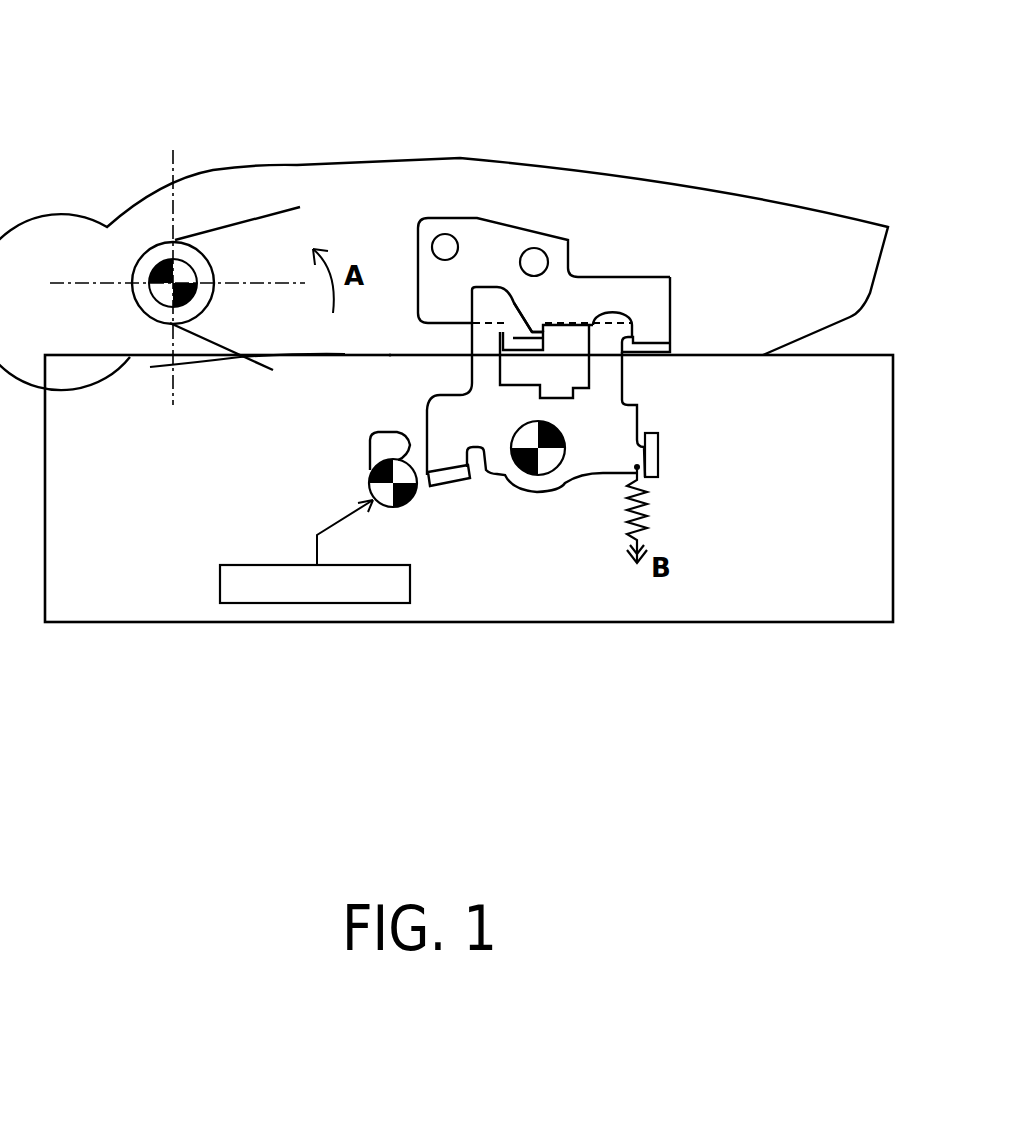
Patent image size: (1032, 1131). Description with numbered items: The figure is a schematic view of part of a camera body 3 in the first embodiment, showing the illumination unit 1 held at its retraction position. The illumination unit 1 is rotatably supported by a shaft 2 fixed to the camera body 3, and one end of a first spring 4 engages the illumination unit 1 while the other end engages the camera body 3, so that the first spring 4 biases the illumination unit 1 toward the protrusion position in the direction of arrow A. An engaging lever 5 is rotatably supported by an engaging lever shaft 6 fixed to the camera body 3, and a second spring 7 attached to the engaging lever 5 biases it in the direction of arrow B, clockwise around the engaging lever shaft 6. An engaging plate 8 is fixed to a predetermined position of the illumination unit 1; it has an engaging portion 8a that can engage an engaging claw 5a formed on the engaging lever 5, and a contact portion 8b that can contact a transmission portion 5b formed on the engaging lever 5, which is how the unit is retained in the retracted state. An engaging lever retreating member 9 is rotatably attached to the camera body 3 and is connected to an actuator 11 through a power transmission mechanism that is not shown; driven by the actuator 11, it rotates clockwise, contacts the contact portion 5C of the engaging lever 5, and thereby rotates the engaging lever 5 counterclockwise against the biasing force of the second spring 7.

The illumination unit 1 is at (350, 217).
The shaft 2 is at (175, 267).
The camera body 3 is at (95, 393).
The first spring 4 is at (272, 213).
The engaging lever 5 is at (587, 410).
The engaging claw 5a is at (649, 342).
The transmission portion 5b is at (506, 346).
The contact portion 5C is at (445, 483).
The engaging lever shaft 6 is at (648, 450).
The second spring 7 is at (643, 543).
The engaging plate 8 is at (477, 262).
The engaging portion 8a is at (659, 342).
The contact portion 8b is at (516, 345).
The engaging lever retreating member 9 is at (385, 440).
The actuator 11 is at (328, 603).